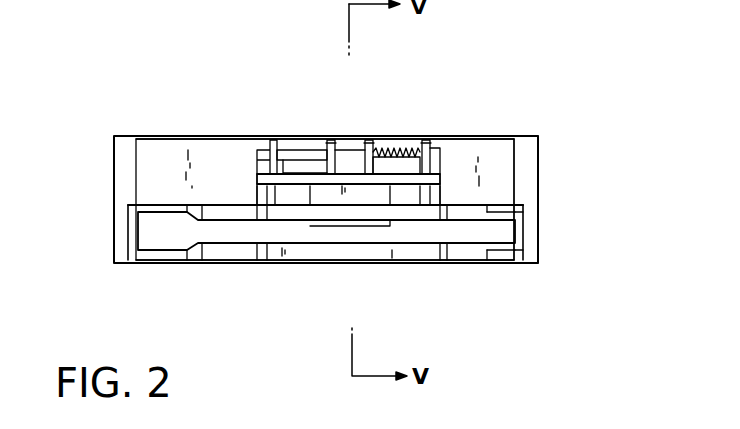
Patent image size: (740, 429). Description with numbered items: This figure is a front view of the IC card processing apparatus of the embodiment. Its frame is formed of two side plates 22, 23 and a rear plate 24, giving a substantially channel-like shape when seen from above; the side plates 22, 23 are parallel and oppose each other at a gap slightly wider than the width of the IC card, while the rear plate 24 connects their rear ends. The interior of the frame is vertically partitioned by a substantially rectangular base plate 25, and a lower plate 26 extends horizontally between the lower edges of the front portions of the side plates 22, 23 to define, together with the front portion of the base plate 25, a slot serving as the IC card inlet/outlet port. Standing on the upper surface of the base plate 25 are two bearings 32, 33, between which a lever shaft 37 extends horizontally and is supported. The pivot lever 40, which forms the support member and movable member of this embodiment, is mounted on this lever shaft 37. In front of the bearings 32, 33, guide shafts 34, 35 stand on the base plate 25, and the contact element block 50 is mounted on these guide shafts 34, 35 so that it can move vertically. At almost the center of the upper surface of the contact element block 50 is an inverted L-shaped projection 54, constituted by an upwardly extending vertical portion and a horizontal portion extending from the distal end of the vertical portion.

The side plate 22 is at (116, 199).
The side plate 23 is at (539, 202).
The rear plate 24 is at (490, 145).
The base plate 25 is at (211, 210).
The lower plate 26 is at (478, 262).
The bearing 32 is at (273, 142).
The bearing 33 is at (427, 141).
The guide shaft 34 is at (279, 196).
The guide shaft 35 is at (422, 195).
The lever shaft 37 is at (300, 152).
The pivot lever 40 is at (331, 142).
The contact element block 50 is at (332, 196).
The inverted L-shaped projection 54 is at (363, 147).